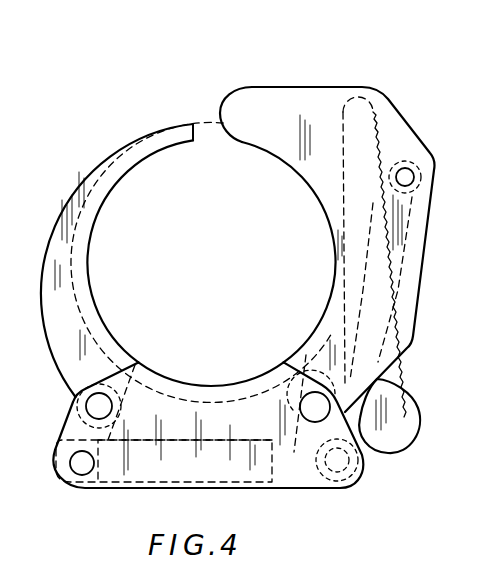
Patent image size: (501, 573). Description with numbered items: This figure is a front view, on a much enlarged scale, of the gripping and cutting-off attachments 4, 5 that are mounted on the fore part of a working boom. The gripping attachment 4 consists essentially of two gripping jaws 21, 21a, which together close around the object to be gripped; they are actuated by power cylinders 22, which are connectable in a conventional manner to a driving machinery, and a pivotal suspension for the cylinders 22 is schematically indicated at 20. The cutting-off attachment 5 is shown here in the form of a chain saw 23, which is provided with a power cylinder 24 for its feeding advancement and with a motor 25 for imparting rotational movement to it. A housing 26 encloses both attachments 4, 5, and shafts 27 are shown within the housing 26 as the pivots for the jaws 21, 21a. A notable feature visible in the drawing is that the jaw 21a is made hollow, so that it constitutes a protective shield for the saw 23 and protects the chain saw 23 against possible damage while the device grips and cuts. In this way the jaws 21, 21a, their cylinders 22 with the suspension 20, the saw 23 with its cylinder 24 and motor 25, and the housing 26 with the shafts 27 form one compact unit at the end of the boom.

The gripping attachment 4 is at (188, 100).
The cutting-off attachment 5 is at (333, 72).
The pivotal suspension 20 is at (76, 465).
The gripping jaw 21 is at (112, 160).
The gripping jaw 21a is at (257, 97).
The power cylinders 22 is at (140, 465).
The chain saw 23 is at (372, 115).
The power cylinder 24 is at (397, 210).
The motor 25 is at (400, 433).
The housing 26 is at (289, 488).
The shafts 27 is at (97, 403).